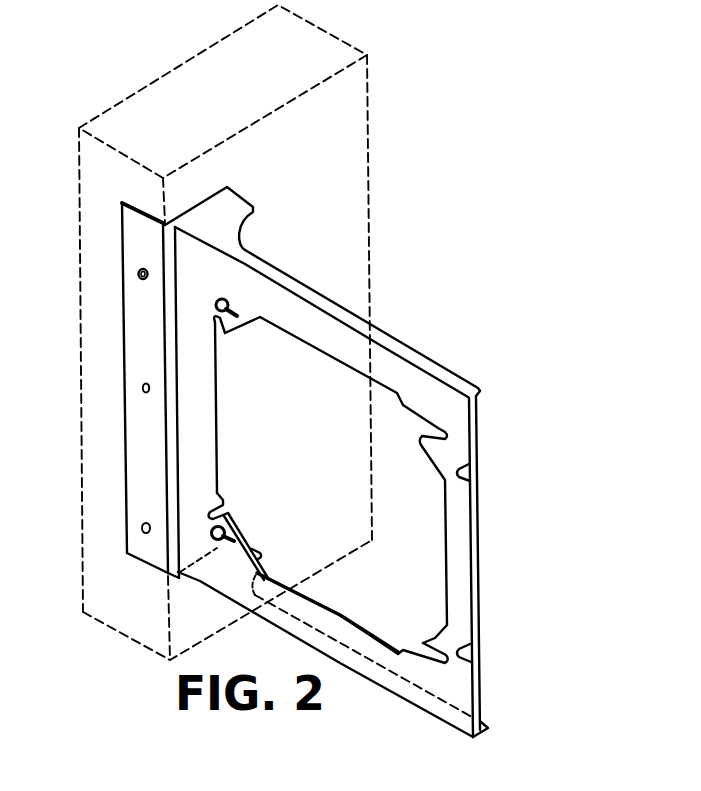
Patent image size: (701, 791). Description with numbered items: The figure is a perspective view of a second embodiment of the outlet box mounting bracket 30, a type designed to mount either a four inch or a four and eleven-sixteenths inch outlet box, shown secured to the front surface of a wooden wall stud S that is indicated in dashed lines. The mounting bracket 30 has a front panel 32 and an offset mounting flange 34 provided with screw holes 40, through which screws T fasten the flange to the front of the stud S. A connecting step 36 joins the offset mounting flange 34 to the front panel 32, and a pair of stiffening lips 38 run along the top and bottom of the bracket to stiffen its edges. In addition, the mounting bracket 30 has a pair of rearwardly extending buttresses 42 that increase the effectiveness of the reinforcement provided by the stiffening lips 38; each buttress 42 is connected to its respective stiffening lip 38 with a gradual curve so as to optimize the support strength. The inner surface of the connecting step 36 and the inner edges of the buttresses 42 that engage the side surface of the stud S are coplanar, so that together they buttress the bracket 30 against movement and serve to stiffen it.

The mounting bracket 30 is at (326, 456).
The front panel 32 is at (314, 330).
The offset mounting flange 34 is at (137, 367).
The connecting step 36 is at (176, 263).
The stiffening lips 38 is at (418, 353).
The screw holes 40 is at (151, 283).
The buttresses 42 is at (245, 197).
The stud S is at (78, 176).
The screws T is at (134, 275).